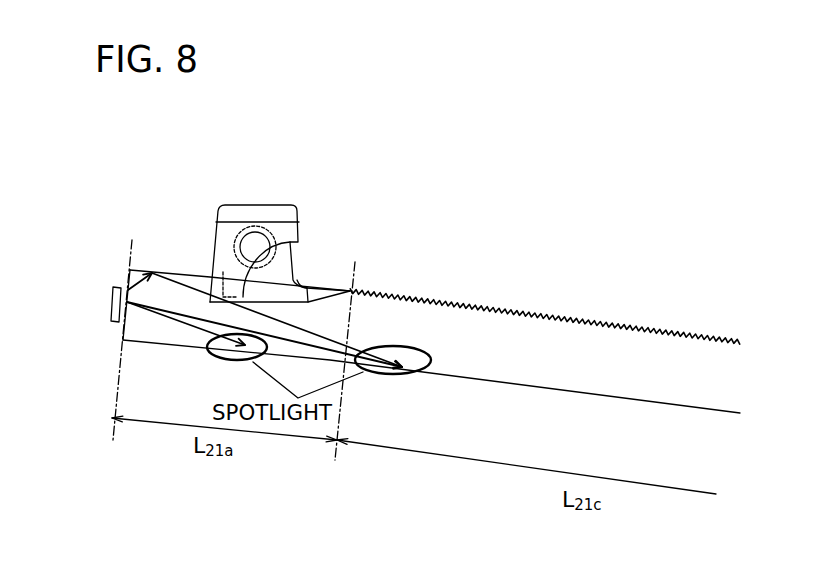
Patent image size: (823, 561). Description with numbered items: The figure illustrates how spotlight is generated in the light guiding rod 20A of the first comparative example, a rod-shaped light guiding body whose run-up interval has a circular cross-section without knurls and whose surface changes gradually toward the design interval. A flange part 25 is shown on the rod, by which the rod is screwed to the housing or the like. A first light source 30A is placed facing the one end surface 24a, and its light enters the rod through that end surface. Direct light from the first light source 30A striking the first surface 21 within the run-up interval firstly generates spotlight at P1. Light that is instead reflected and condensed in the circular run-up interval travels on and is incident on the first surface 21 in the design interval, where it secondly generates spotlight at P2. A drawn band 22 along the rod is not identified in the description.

The light guiding rod 20A is at (590, 217).
The first surface 21 is at (480, 377).
The reflecting portion 22 is at (505, 302).
The one end surface 24a is at (122, 328).
The flange part 25 is at (257, 205).
The first light source 30A is at (112, 302).
The first spotlight P1 is at (237, 363).
The second spotlight P2 is at (393, 376).